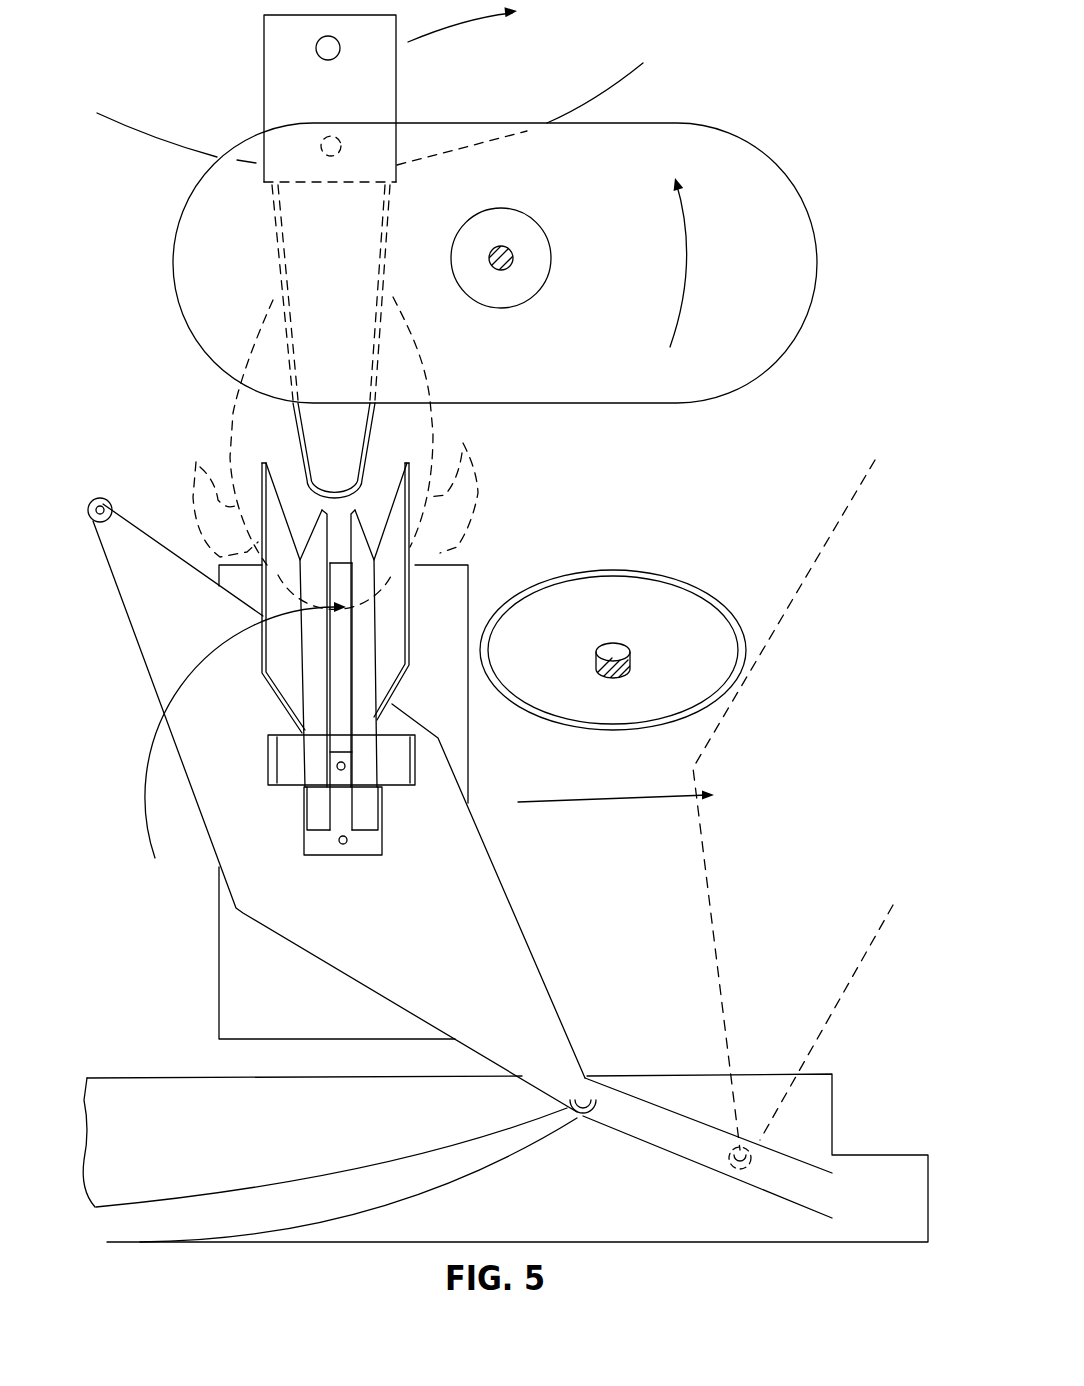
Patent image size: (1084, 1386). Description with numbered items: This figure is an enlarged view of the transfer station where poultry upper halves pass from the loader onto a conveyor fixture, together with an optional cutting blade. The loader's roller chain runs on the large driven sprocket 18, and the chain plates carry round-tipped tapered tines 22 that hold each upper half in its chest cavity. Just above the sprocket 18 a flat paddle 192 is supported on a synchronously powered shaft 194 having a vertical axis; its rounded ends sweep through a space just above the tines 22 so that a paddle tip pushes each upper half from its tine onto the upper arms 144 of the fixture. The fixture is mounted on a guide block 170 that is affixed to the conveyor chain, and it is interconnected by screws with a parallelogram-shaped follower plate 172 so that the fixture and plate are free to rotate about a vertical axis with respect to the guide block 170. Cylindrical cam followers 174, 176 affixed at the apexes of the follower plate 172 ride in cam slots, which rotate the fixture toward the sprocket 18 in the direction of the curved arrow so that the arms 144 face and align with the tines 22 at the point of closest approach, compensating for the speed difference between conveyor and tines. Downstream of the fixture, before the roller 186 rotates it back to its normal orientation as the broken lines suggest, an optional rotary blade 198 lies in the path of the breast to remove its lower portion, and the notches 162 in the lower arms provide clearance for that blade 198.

The large driven sprocket 18 is at (214, 127).
The round-tipped tapered tine 22 is at (362, 435).
The upper arm 144 is at (363, 535).
The notch 162 is at (400, 690).
The guide block 170 is at (291, 988).
The follower plate 172 is at (442, 910).
The cam follower 174 is at (110, 500).
The cam follower 176 is at (603, 1092).
The roller 186 is at (855, 975).
The flat paddle 192 is at (808, 318).
The synchronously powered shaft 194 is at (540, 256).
The rotary blade 198 is at (620, 575).